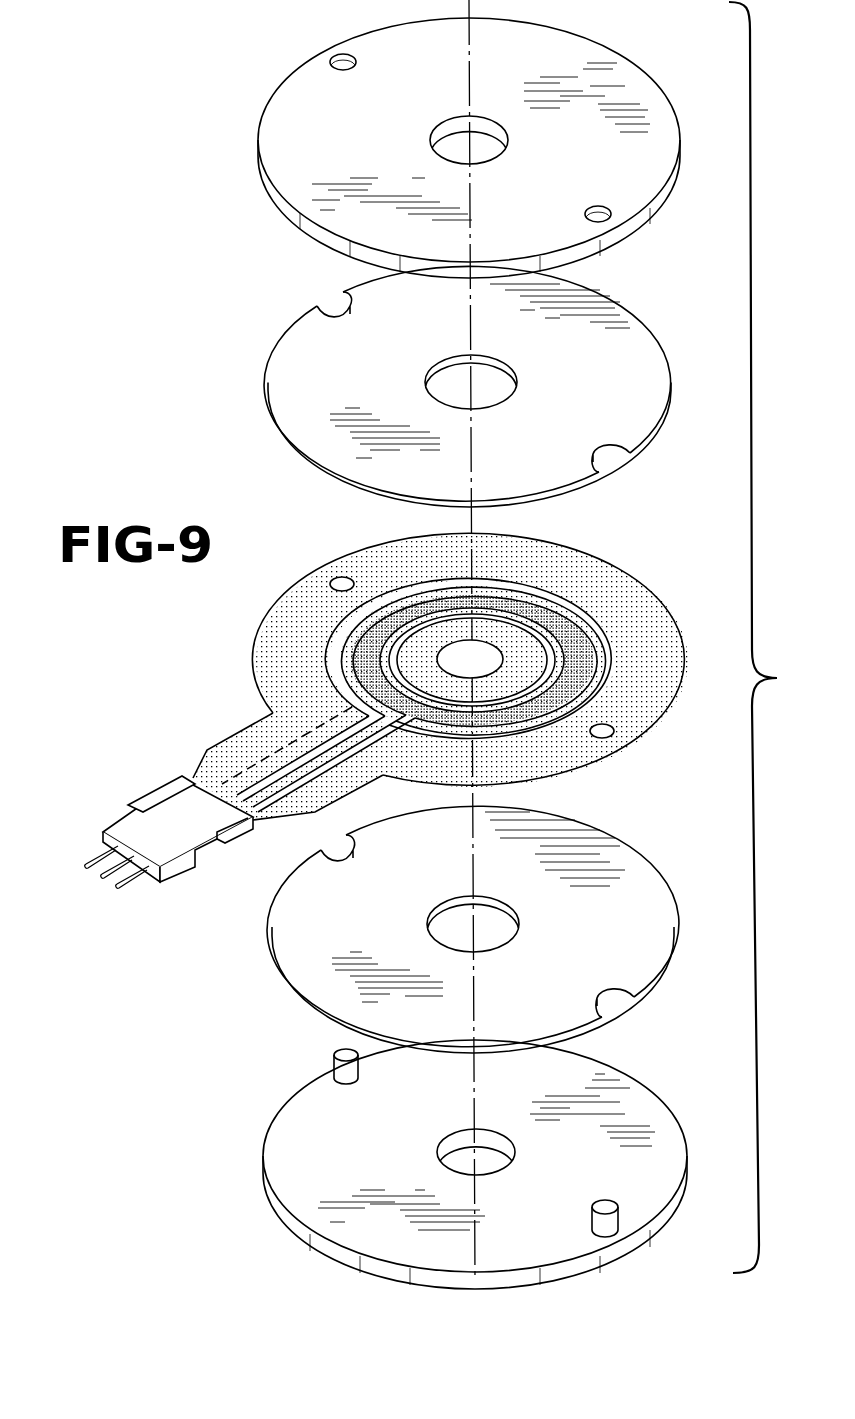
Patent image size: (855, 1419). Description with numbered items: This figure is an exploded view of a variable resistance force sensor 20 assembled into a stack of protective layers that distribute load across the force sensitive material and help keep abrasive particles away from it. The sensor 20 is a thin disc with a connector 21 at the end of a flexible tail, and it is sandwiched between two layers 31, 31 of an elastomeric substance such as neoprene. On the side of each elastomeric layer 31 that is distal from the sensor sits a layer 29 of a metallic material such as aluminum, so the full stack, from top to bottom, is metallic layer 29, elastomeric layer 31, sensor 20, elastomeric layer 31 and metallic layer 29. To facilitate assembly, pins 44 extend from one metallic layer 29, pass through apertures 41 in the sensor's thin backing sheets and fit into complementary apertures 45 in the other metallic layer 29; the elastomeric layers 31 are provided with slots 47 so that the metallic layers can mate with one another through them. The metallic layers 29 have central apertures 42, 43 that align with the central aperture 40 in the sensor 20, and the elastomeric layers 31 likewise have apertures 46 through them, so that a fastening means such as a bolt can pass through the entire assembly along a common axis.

The variable resistance force sensor 20 is at (604, 576).
The electrical connector 21 is at (152, 808).
The layer of metallic material 29 is at (308, 158).
The layer of elastomeric substance 31 is at (308, 381).
The central aperture 40 is at (457, 665).
The apertures 41 is at (342, 582).
The central aperture 42 is at (462, 1158).
The central aperture 43 is at (460, 143).
The pins 44 is at (352, 1071).
The complementary apertures 45 is at (343, 60).
The apertures 46 is at (487, 391).
The slots 47 is at (333, 308).